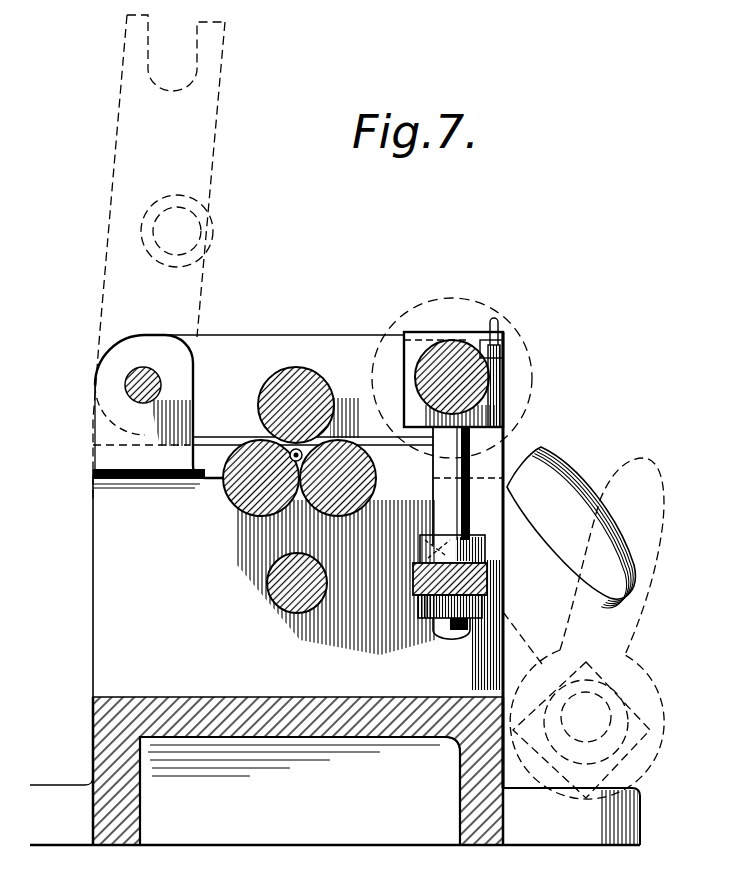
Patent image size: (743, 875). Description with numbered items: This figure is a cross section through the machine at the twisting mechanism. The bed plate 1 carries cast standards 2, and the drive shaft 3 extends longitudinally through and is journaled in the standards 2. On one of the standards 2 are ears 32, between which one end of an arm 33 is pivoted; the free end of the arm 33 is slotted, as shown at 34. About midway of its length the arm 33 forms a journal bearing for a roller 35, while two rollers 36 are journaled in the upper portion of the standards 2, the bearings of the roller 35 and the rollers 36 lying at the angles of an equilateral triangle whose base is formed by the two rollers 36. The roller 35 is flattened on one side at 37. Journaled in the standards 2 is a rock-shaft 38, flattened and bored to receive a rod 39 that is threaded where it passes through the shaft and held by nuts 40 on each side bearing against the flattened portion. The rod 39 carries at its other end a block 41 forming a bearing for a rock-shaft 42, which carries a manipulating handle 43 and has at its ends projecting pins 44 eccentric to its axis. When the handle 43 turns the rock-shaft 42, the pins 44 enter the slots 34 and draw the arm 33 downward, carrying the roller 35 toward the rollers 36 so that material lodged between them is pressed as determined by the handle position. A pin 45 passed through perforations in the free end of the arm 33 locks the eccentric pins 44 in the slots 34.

The bed plate 1 is at (335, 771).
The standards 2 is at (98, 592).
The drive shaft 3 is at (267, 588).
The ears 32 is at (148, 345).
The arm 33 is at (299, 390).
The slot 34 is at (503, 366).
The roller 35 is at (304, 382).
The rollers 36 is at (230, 493).
The flattened side 37 is at (323, 425).
The rock-shaft 38 is at (425, 582).
The rod 39 is at (440, 500).
The nuts 40 is at (480, 597).
The block 41 is at (438, 340).
The rock-shaft 42 is at (412, 352).
The manipulating handle 43 is at (560, 475).
The pins 44 is at (504, 340).
The pin 45 is at (496, 322).